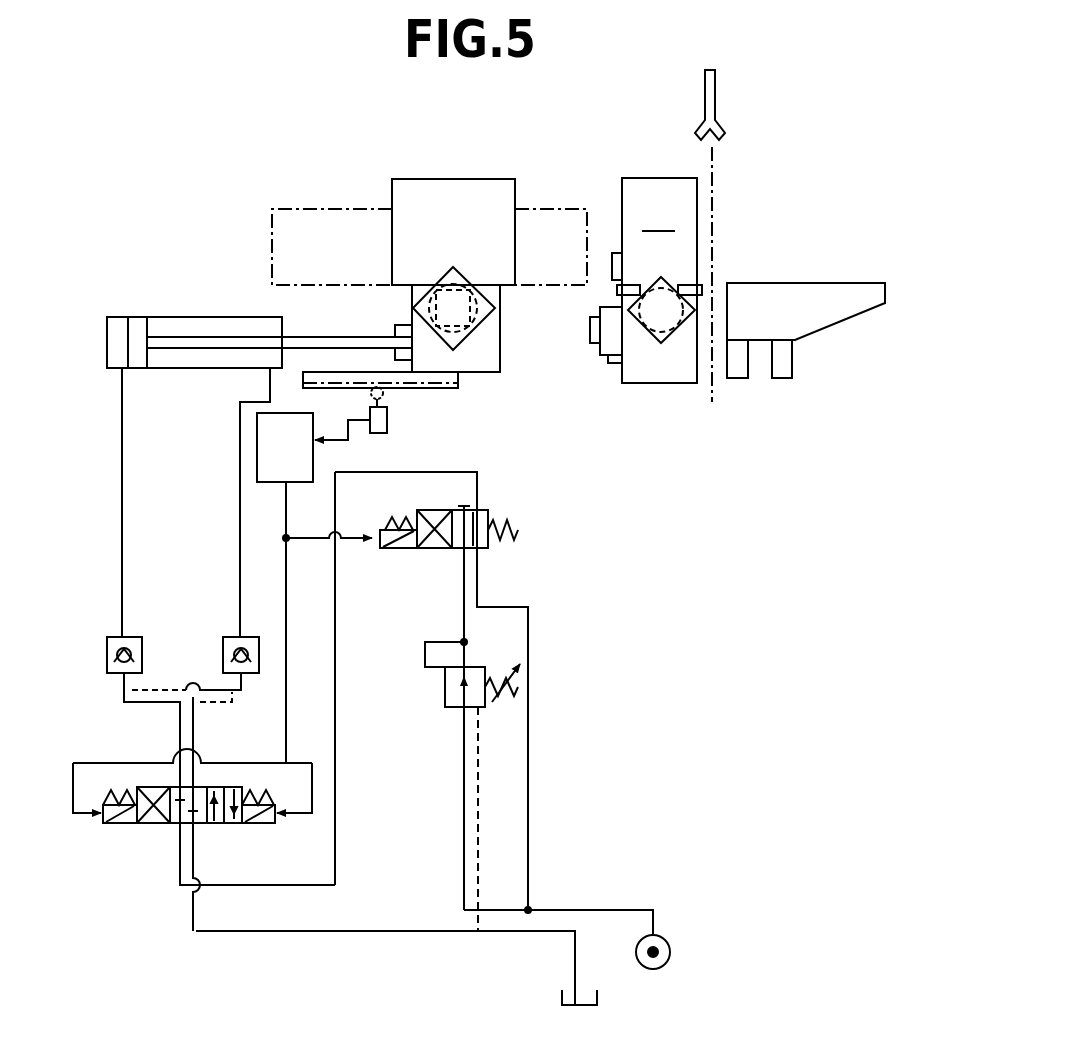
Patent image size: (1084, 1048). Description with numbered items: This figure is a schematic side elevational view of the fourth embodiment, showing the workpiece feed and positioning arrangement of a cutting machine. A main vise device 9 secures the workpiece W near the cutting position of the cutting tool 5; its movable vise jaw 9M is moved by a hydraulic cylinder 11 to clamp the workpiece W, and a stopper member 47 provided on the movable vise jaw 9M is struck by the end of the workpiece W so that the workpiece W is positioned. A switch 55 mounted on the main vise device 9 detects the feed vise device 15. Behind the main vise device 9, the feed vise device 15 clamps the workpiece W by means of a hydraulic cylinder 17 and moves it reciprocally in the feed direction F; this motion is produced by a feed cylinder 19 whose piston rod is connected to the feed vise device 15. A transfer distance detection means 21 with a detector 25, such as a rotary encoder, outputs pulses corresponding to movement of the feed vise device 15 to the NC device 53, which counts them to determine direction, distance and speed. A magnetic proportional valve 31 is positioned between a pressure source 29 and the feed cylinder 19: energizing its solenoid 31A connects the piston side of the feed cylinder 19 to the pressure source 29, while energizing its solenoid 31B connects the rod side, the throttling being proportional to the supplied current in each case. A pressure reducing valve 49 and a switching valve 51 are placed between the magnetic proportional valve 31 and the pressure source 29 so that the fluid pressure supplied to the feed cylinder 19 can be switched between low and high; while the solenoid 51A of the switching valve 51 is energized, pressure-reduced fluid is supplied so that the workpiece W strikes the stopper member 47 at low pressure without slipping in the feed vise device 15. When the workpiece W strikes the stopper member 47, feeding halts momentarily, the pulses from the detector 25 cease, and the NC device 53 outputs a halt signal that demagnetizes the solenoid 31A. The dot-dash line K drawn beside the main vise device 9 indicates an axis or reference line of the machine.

The cutting tool 5 is at (716, 74).
The main vise device 9 is at (655, 176).
The movable vise jaw 9M is at (658, 217).
The hydraulic cylinder 11 is at (662, 345).
The feed vise device 15 is at (413, 177).
The hydraulic cylinder 17 is at (461, 343).
The feed cylinder 19 is at (185, 310).
The transfer distance detection means 21 is at (416, 394).
The detector 25 is at (389, 426).
The pressure source 29 is at (671, 952).
The magnetic proportional valve 31 is at (163, 828).
The solenoid 31A is at (265, 824).
The solenoid 31B is at (113, 824).
The stopper member 47 is at (614, 262).
The pressure reducing valve 49 is at (450, 708).
The switching valve 51 is at (497, 511).
The solenoid 51A is at (385, 548).
The NC device 53 is at (257, 438).
The switch 55 is at (600, 332).
The workpiece W is at (288, 212).
The feed direction F is at (577, 250).
The spindle axis K is at (723, 293).